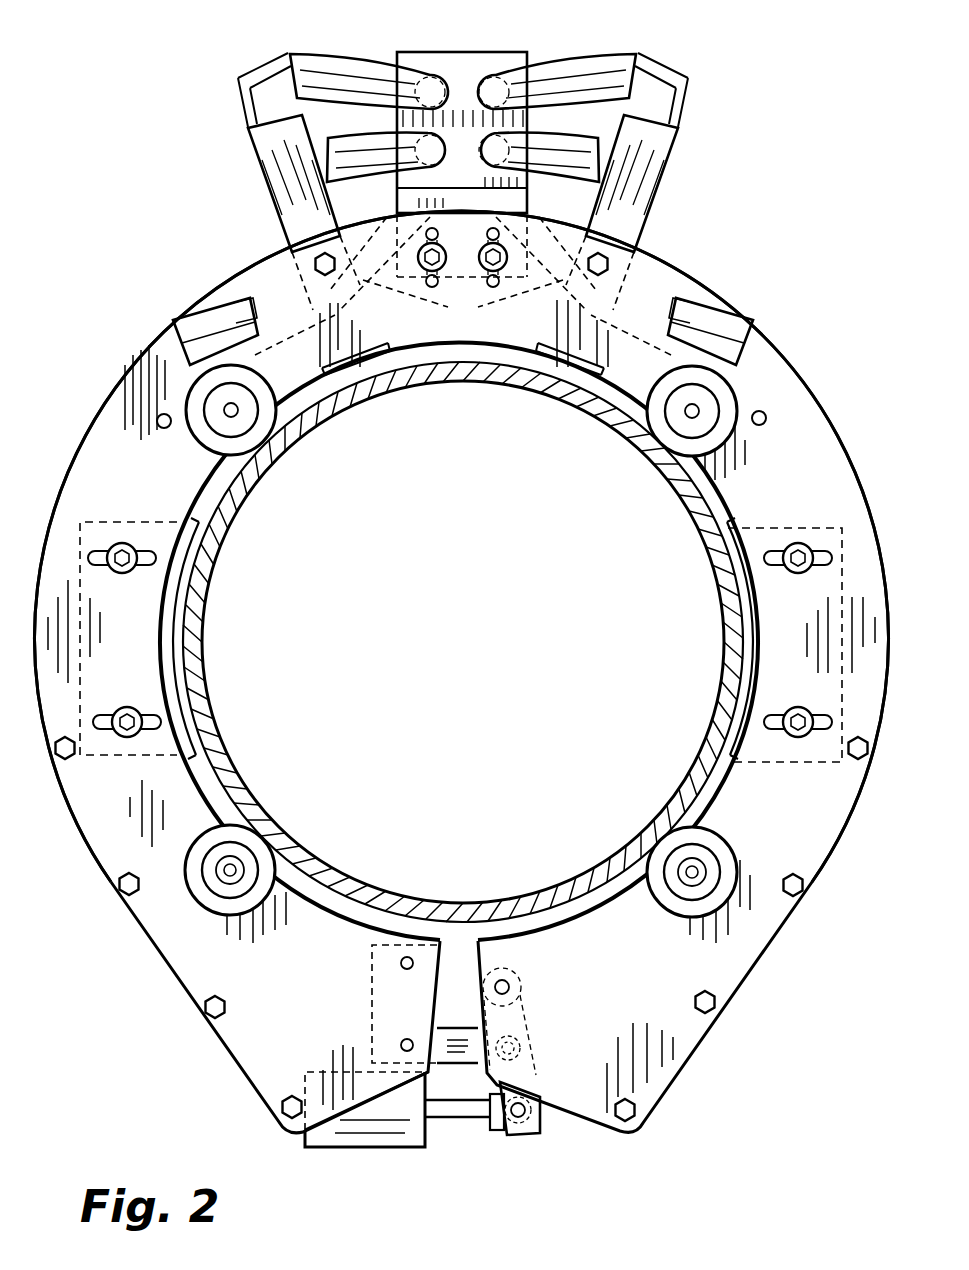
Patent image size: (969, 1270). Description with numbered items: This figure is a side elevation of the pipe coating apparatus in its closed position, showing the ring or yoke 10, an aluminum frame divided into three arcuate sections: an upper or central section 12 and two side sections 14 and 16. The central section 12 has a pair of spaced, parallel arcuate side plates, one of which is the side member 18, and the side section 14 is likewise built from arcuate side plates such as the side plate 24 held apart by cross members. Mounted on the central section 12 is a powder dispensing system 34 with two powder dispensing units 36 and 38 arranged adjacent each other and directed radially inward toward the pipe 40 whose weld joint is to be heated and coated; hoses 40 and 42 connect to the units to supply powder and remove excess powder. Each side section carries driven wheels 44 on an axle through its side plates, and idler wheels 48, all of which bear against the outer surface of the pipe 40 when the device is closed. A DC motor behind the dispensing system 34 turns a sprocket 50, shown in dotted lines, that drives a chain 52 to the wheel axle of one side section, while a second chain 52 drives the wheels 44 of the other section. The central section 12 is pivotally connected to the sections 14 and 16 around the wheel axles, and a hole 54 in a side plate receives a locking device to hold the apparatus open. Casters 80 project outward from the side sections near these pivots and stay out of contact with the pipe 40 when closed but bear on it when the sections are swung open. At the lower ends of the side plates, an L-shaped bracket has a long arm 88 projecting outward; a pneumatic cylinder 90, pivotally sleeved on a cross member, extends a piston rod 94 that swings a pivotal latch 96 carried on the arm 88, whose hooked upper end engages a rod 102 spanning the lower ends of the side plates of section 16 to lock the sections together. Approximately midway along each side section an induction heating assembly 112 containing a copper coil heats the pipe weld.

The ring or yoke 10 is at (787, 372).
The upper or central yoke section 12 is at (688, 290).
The side yoke section 14 is at (90, 447).
The side yoke section 16 is at (803, 400).
The arcuate side member or plate 18 is at (237, 287).
The arcuate side plate 24 is at (98, 856).
The powder dispensing system 34 is at (477, 42).
The powder dispensing unit 36 is at (270, 165).
The powder dispensing unit 38 is at (648, 160).
The pipe 40 is at (320, 60).
The hose 42 is at (375, 170).
The driven wheels 44 is at (243, 452).
The idler wheels 48 is at (257, 845).
The sprocket 50 is at (440, 298).
The chain 52 is at (658, 258).
The hole 54 is at (163, 428).
The rollers or casters 80 is at (200, 323).
The long arm of L-shaped bracket 88 is at (463, 1031).
The pneumatic cylinder 90 is at (373, 1150).
The piston rod 94 is at (457, 1127).
The pivotal latch member 96 is at (525, 1033).
The rod 102 is at (507, 986).
The induction heating assembly 112 is at (180, 590).